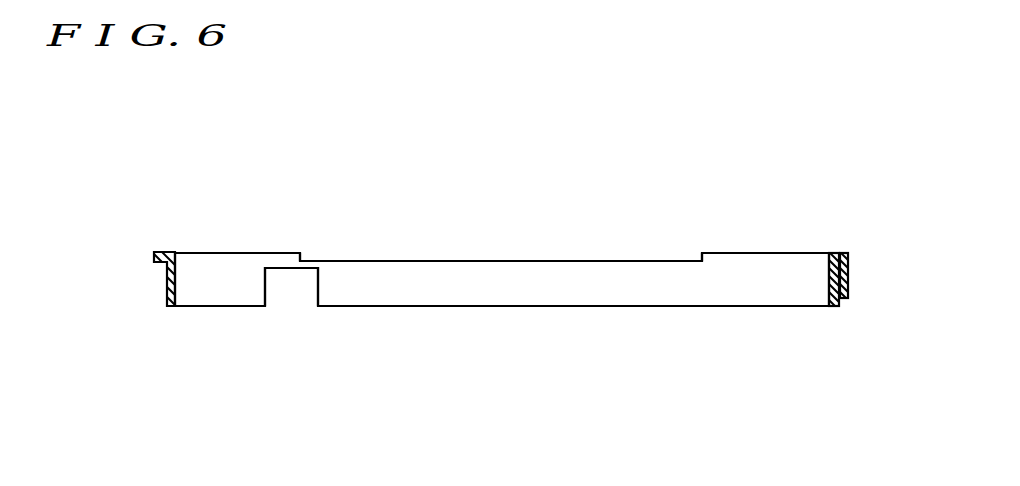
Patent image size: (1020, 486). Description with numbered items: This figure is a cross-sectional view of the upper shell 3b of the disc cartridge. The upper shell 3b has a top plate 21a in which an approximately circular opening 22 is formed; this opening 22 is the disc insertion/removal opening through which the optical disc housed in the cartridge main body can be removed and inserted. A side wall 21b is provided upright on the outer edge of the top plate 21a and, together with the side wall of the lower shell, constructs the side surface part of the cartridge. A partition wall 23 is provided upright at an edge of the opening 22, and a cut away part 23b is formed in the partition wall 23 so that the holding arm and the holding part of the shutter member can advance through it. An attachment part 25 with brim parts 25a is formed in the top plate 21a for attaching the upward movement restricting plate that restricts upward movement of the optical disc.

The upper shell 3b is at (540, 152).
The top plate 21a is at (162, 252).
The side wall 21b is at (848, 275).
The opening 22 is at (733, 286).
The partition wall 23 is at (538, 288).
The cut away part 23b is at (290, 285).
The attachment part 25 is at (475, 260).
The brim part 25a is at (298, 252).